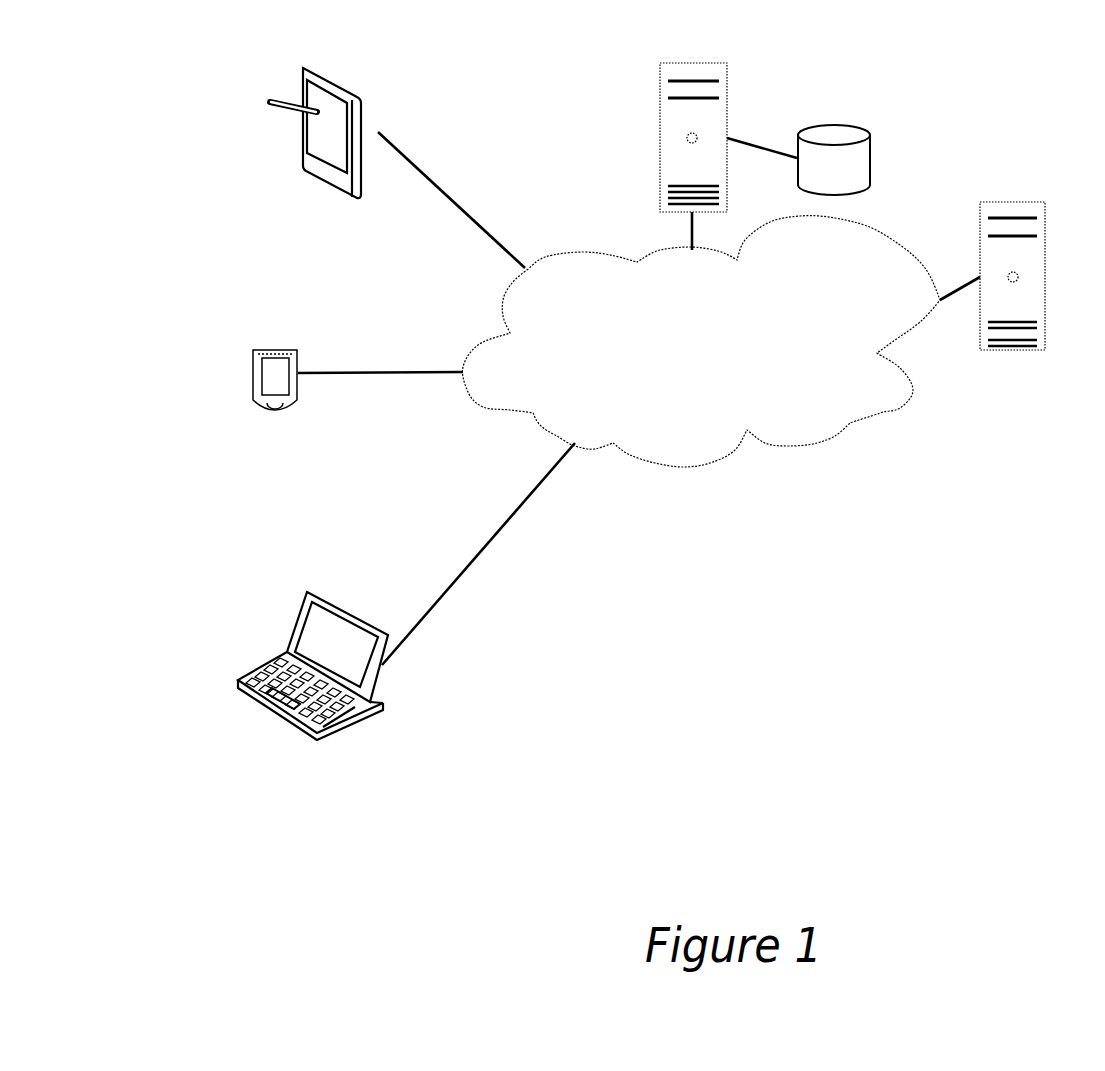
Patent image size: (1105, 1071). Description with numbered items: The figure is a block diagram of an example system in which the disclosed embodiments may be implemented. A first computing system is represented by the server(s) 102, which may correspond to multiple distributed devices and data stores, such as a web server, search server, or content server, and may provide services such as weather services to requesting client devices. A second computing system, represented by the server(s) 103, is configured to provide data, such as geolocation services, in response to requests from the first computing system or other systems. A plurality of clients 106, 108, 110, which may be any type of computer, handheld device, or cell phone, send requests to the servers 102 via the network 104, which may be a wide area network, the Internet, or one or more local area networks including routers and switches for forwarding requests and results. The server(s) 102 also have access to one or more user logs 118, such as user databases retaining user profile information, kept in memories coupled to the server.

The server(s) 102 is at (730, 90).
The server(s) 103 is at (1013, 202).
The network 104 is at (701, 341).
The client 106 is at (265, 112).
The client 108 is at (245, 365).
The client 110 is at (265, 650).
The user logs 118 is at (883, 160).